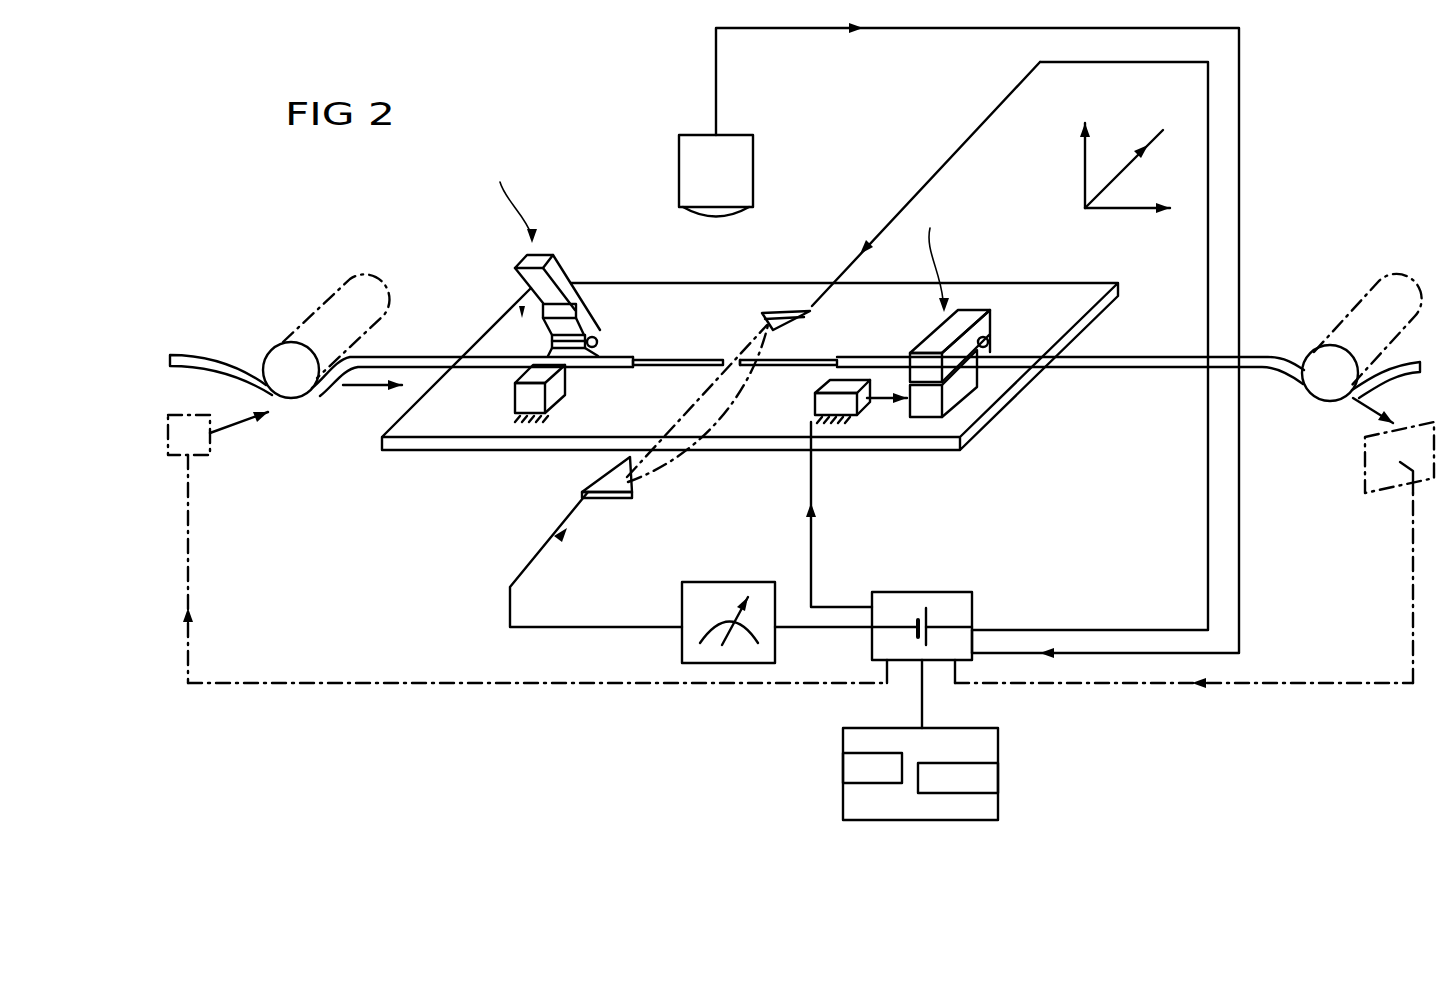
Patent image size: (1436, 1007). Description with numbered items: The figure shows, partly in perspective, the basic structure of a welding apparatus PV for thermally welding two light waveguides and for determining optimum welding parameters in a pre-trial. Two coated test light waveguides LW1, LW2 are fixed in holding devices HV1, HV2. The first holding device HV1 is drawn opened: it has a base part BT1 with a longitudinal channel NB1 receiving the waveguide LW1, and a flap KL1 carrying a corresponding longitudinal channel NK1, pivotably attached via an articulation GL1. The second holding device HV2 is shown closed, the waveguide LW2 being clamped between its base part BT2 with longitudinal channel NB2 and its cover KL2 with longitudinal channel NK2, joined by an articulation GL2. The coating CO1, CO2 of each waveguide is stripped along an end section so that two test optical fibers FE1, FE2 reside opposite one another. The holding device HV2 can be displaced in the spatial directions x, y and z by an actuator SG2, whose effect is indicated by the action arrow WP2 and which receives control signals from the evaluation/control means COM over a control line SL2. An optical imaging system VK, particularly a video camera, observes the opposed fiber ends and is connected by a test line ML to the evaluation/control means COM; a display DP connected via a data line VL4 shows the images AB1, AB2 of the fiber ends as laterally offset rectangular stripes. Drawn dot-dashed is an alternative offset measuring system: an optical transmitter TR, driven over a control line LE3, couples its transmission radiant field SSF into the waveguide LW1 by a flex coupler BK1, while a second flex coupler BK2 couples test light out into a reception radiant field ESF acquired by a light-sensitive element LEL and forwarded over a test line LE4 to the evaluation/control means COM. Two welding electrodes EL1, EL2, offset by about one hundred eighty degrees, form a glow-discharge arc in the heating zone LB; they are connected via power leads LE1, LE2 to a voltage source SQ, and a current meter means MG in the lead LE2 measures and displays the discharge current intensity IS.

The test line ML is at (915, 30).
The optical imaging system VK is at (682, 165).
The power lead LE1 is at (1050, 63).
The power lead LE2 is at (510, 607).
The control line LE3 is at (438, 684).
The test line LE4 is at (1312, 683).
The light-sensitive element LEL is at (1368, 493).
The welding electrode EL1 is at (773, 310).
The welding electrode EL2 is at (613, 500).
The arc region LB is at (662, 477).
The test light waveguide LW1 is at (412, 356).
The test light waveguide LW2 is at (1158, 356).
The flex coupler BK1 is at (312, 320).
The flex coupler BK2 is at (1345, 315).
The test optical fiber FE1 is at (676, 356).
The test optical fiber FE2 is at (805, 357).
The coating CO1 is at (650, 367).
The coating CO2 is at (743, 366).
The holding device HV1 is at (504, 234).
The holding device HV2 is at (933, 253).
The flap KL1 is at (558, 256).
The cover KL2 is at (932, 338).
The longitudinal channel NK1 is at (575, 286).
The longitudinal channel NK2 is at (965, 318).
The longitudinal channel NB1 is at (565, 363).
The longitudinal channel NB2 is at (975, 378).
The articulation GL1 is at (600, 342).
The articulation GL2 is at (989, 342).
The base part BT1 is at (590, 373).
The base part BT2 is at (972, 412).
The action arrow WP2 is at (877, 407).
The actuator SG2 is at (815, 405).
The transmission radiant field SSF is at (240, 425).
The optical transmitter TR is at (200, 447).
The welding apparatus PV is at (300, 683).
The reception radiant field ESF is at (1353, 412).
The control line SL2 is at (811, 562).
The voltage source SQ is at (930, 606).
The current meter means MG is at (682, 597).
The discharge current intensity IS is at (723, 616).
The evaluation/control means COM is at (972, 614).
The data line VL4 is at (922, 708).
The display DP is at (998, 745).
The image of test fiber end AB1 is at (855, 772).
The image of test fiber end AB2 is at (983, 778).
The spatial direction x is at (1133, 154).
The spatial direction y is at (1088, 145).
The spatial direction z is at (1140, 206).